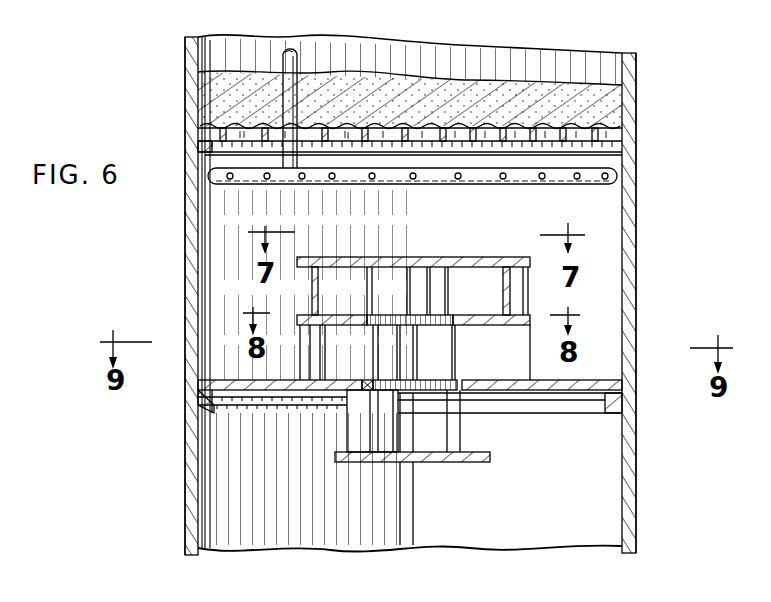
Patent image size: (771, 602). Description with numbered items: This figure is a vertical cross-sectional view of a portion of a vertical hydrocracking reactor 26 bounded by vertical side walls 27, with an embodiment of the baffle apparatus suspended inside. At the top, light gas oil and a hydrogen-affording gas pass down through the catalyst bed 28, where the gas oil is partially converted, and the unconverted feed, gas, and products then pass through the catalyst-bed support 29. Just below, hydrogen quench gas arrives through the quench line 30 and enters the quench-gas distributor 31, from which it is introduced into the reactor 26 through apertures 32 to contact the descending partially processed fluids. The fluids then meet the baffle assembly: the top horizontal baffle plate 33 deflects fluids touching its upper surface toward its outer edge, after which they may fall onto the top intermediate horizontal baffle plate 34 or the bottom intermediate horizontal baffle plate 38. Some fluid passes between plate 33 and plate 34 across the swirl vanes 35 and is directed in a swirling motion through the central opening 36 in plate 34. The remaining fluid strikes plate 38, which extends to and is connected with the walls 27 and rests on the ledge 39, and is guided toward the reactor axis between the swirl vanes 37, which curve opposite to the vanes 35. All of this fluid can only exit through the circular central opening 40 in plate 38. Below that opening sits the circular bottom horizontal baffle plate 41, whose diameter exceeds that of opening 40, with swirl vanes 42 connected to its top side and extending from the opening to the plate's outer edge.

The vertical reactor 26 is at (642, 93).
The vertical side walls 27 is at (190, 490).
The catalyst bed 28 is at (395, 75).
The catalyst-bed support 29 is at (531, 120).
The quench line 30 is at (298, 65).
The quench-gas distributor 31 is at (412, 194).
The apertures 32 is at (263, 186).
The top horizontal baffle plate 33 is at (505, 257).
The top intermediate horizontal baffle plate 34 is at (472, 326).
The swirl vanes 35 is at (387, 273).
The central opening 36 is at (392, 327).
The swirl vanes 37 is at (345, 368).
The bottom intermediate horizontal baffle plate 38 is at (547, 382).
The ledge 39 is at (214, 402).
The central opening 40 is at (403, 445).
The bottom horizontal baffle plate 41 is at (472, 461).
The swirl vanes 42 is at (376, 392).